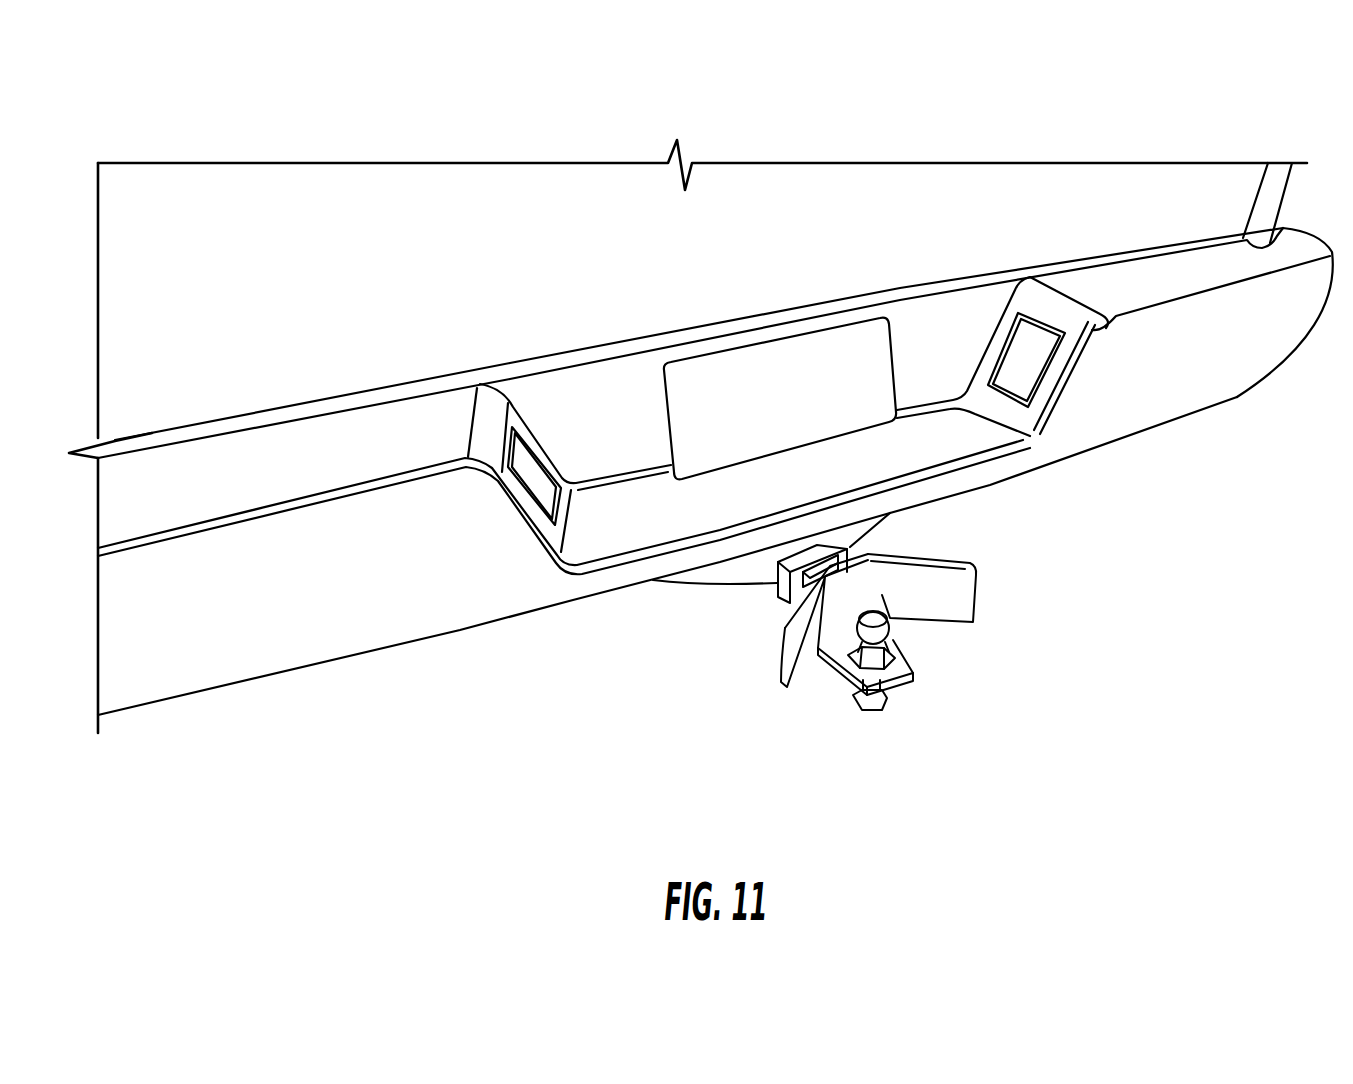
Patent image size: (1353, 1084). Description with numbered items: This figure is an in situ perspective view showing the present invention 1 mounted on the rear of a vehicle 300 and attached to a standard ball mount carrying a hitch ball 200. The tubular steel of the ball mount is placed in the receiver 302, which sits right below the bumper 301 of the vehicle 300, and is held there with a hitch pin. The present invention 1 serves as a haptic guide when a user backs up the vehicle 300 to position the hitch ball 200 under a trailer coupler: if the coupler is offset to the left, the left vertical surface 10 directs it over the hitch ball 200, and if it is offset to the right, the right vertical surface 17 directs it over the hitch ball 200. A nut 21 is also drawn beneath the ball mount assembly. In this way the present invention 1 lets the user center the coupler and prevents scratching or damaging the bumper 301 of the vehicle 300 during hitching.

The present invention 1 is at (775, 710).
The left vertical surface 10 is at (795, 637).
The right vertical surface 17 is at (942, 592).
The nut 21 is at (887, 677).
The hitch ball 200 is at (887, 640).
The vehicle 300 is at (765, 245).
The bumper 301 is at (1200, 338).
The receiver 302 is at (805, 560).